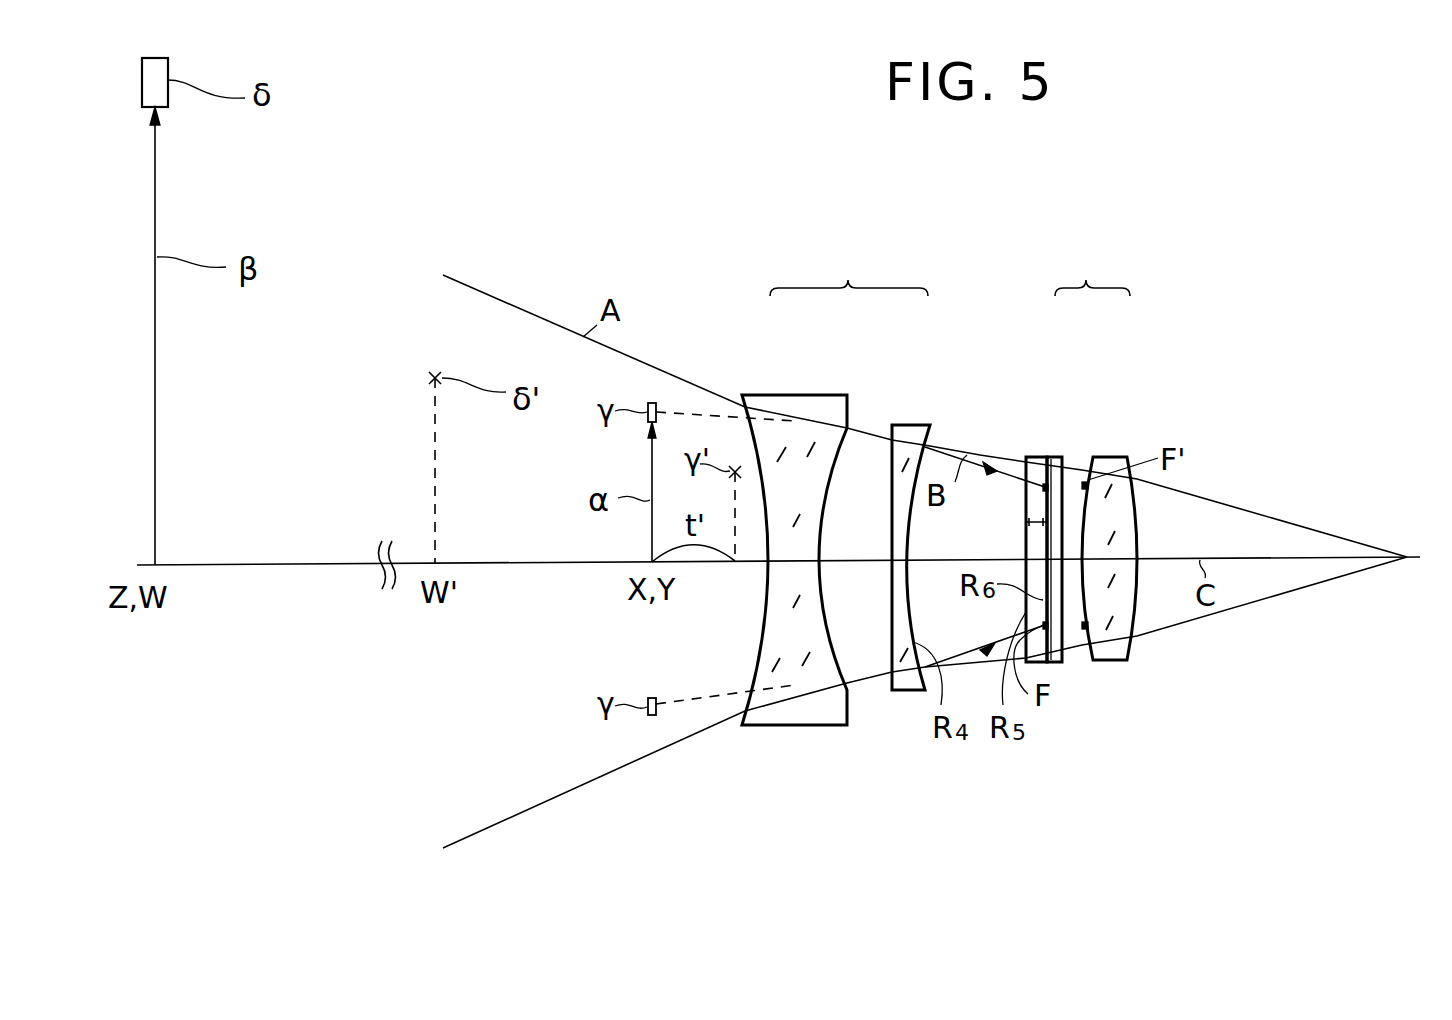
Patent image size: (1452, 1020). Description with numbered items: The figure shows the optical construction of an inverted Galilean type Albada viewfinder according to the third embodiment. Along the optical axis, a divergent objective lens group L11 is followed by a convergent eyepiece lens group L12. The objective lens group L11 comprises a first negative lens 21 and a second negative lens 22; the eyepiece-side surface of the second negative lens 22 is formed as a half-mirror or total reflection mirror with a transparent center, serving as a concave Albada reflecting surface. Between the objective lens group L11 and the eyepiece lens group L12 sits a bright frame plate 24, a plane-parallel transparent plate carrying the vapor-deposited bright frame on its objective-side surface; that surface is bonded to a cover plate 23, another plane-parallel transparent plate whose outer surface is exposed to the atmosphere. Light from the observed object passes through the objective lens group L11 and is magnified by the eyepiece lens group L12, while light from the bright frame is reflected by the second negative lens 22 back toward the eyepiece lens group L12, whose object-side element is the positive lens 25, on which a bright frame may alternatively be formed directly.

The first negative lens 21 is at (795, 395).
The second negative lens 22 is at (905, 425).
The cover plate 23 is at (1035, 457).
The bright frame plate 24 is at (1055, 457).
The positive lens 25 is at (1105, 457).
The objective lens group L11 is at (849, 270).
The eyepiece lens group L12 is at (1091, 270).